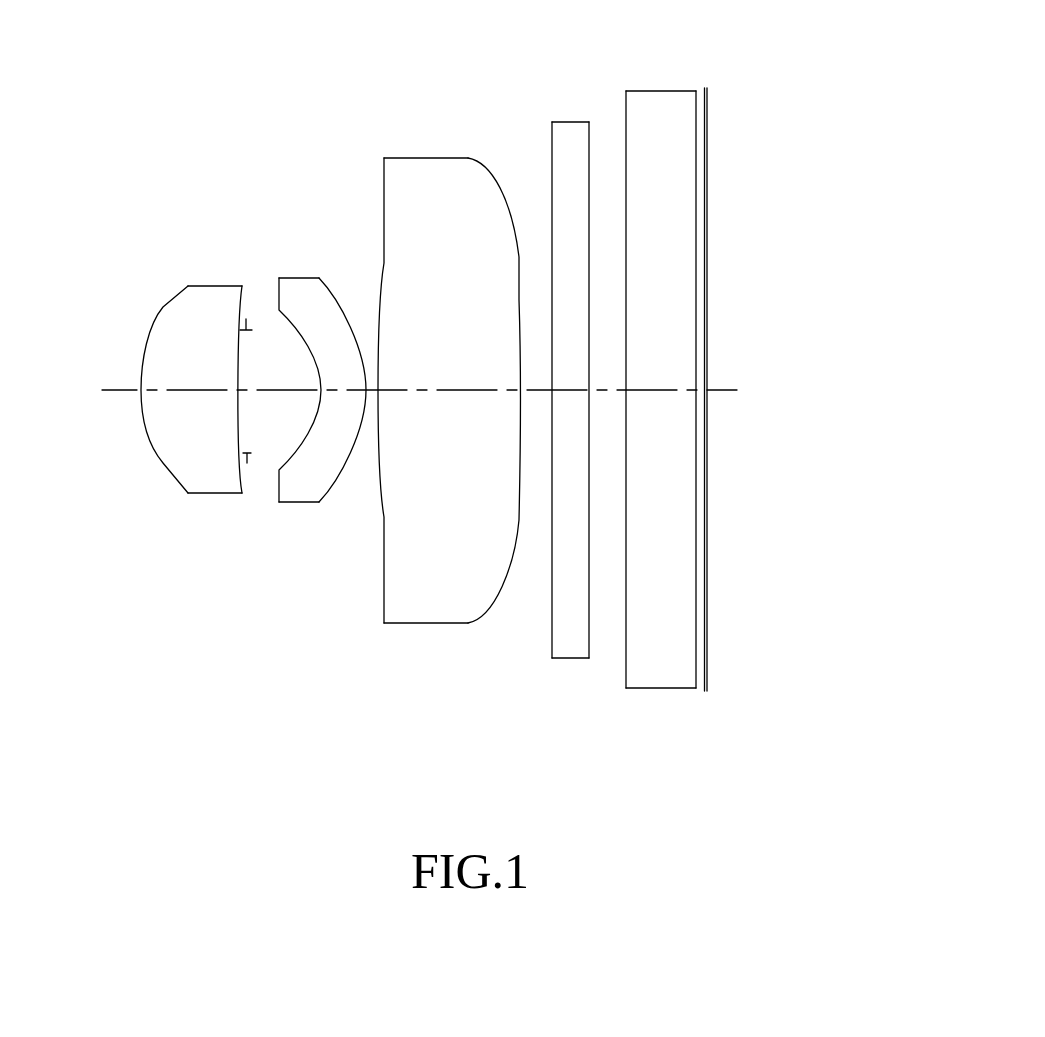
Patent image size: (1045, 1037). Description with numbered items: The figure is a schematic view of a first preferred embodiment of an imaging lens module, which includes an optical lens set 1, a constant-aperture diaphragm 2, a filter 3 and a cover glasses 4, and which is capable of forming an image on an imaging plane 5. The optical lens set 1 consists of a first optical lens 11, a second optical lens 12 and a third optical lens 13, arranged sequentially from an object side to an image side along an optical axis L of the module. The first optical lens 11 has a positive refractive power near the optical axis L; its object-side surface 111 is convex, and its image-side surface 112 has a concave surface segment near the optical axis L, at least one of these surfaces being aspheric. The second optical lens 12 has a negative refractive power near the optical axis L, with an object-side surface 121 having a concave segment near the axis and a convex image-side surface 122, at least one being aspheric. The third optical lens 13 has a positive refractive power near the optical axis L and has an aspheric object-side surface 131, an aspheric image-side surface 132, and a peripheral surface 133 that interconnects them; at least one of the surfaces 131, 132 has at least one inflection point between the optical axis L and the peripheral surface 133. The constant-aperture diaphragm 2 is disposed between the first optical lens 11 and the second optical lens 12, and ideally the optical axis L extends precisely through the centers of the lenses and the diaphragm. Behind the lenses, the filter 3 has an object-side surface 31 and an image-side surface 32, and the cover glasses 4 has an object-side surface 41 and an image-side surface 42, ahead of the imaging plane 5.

The optical lens set 1 is at (196, 662).
The first optical lens 11 is at (191, 410).
The object-side surface 111 is at (165, 306).
The image-side surface 112 is at (243, 307).
The second optical lens 12 is at (302, 469).
The object-side surface 121 is at (280, 447).
The image-side surface 122 is at (337, 477).
The third optical lens 13 is at (431, 388).
The object-side surface 131 is at (384, 196).
The image-side surface 132 is at (489, 175).
The peripheral surface 133 is at (424, 158).
The constant-aperture diaphragm 2 is at (248, 324).
The filter 3 is at (564, 412).
The object-side surface 31 is at (552, 140).
The image-side surface 32 is at (589, 140).
The cover glasses 4 is at (655, 404).
The object-side surface 41 is at (626, 112).
The image-side surface 42 is at (696, 112).
The imaging plane 5 is at (708, 653).
The optical axis L is at (431, 393).